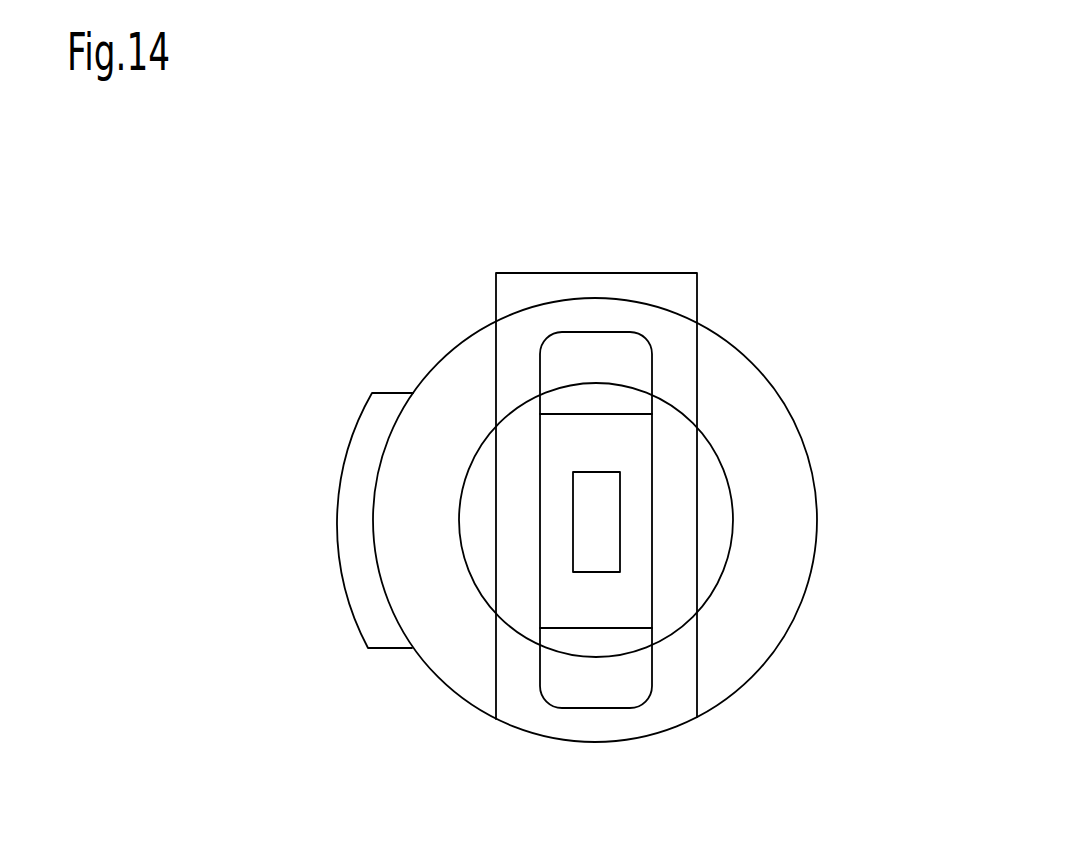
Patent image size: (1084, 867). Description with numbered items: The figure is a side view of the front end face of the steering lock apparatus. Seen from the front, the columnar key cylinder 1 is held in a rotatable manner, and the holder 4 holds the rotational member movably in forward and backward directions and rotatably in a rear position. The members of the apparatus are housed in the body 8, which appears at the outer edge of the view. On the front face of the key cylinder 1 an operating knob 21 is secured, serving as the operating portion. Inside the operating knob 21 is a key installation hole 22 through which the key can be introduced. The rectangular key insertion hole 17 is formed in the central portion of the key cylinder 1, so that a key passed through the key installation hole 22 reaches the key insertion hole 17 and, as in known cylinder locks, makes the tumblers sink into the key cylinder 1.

The key cylinder 1 is at (482, 547).
The holder 4 is at (465, 380).
The body 8 is at (363, 542).
The key insertion hole 17 is at (593, 522).
The operating knob 21 is at (676, 371).
The key installation hole 22 is at (652, 568).